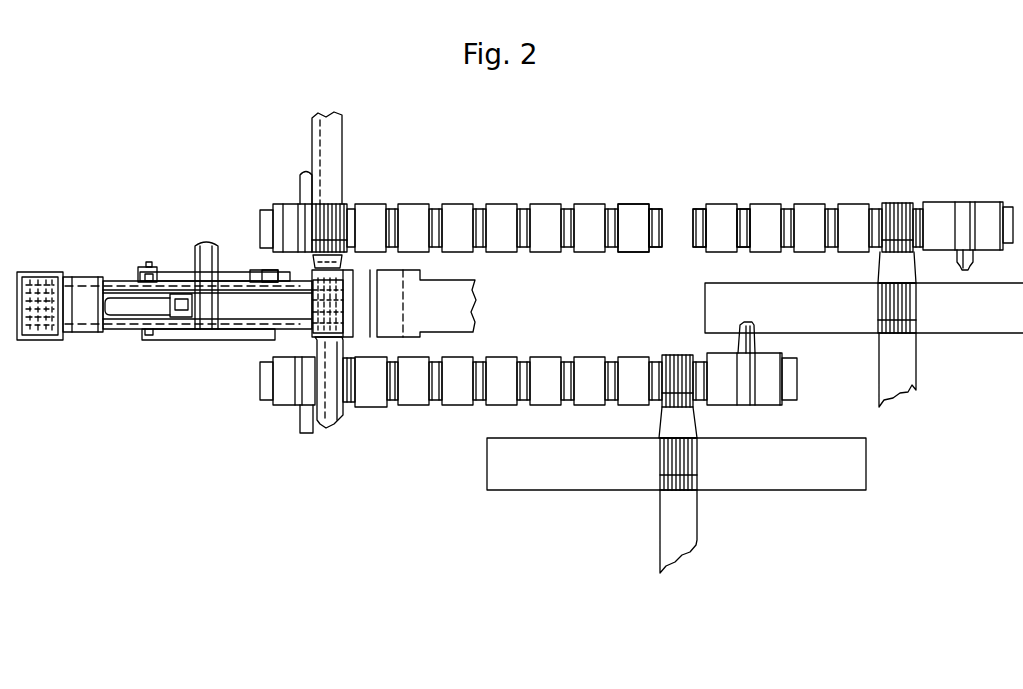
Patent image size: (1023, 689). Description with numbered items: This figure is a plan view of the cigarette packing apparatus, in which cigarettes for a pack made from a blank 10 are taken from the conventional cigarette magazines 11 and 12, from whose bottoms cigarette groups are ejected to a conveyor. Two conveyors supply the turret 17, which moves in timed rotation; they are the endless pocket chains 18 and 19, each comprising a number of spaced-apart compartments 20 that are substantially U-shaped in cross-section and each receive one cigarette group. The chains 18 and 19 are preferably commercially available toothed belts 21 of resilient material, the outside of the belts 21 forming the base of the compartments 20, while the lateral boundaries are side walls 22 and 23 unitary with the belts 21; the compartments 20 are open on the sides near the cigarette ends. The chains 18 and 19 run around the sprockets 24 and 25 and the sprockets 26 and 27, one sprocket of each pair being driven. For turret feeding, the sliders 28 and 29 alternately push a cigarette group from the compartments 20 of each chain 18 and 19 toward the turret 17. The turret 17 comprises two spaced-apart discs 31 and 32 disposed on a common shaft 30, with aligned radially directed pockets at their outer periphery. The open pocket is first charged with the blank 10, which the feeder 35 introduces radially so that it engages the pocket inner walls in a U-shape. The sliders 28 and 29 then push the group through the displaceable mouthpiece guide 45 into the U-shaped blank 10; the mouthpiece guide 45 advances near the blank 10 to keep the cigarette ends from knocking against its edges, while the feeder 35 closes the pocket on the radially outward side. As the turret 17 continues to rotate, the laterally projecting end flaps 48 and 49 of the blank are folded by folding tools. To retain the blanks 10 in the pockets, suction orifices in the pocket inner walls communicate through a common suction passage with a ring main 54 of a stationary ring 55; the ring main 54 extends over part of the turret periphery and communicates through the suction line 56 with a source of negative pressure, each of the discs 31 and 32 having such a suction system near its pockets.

The blank 10 is at (370, 270).
The cigarette magazine 11 is at (600, 494).
The cigarette magazine 12 is at (936, 366).
The turret 17 is at (203, 344).
The endless pocket chain 18 is at (569, 200).
The endless pocket chain 19 is at (569, 352).
The compartment 20 is at (657, 198).
The toothed belt 21 is at (655, 251).
The side wall 22 is at (699, 210).
The side wall 23 is at (741, 210).
The sprocket 24 is at (956, 203).
The sprocket 25 is at (283, 207).
The sprocket 26 is at (783, 357).
The sprocket 27 is at (282, 405).
The slider 28 is at (335, 170).
The slider 29 is at (331, 418).
The shaft 30 is at (207, 243).
The disc 31 is at (172, 290).
The disc 32 is at (163, 338).
The feeder 35 is at (467, 310).
The mouthpiece guide 45 is at (340, 262).
The end flap 48 is at (314, 277).
The end flap 49 is at (313, 333).
The ring main 54 is at (263, 277).
The stationary ring 55 is at (268, 272).
The suction line 56 is at (148, 267).